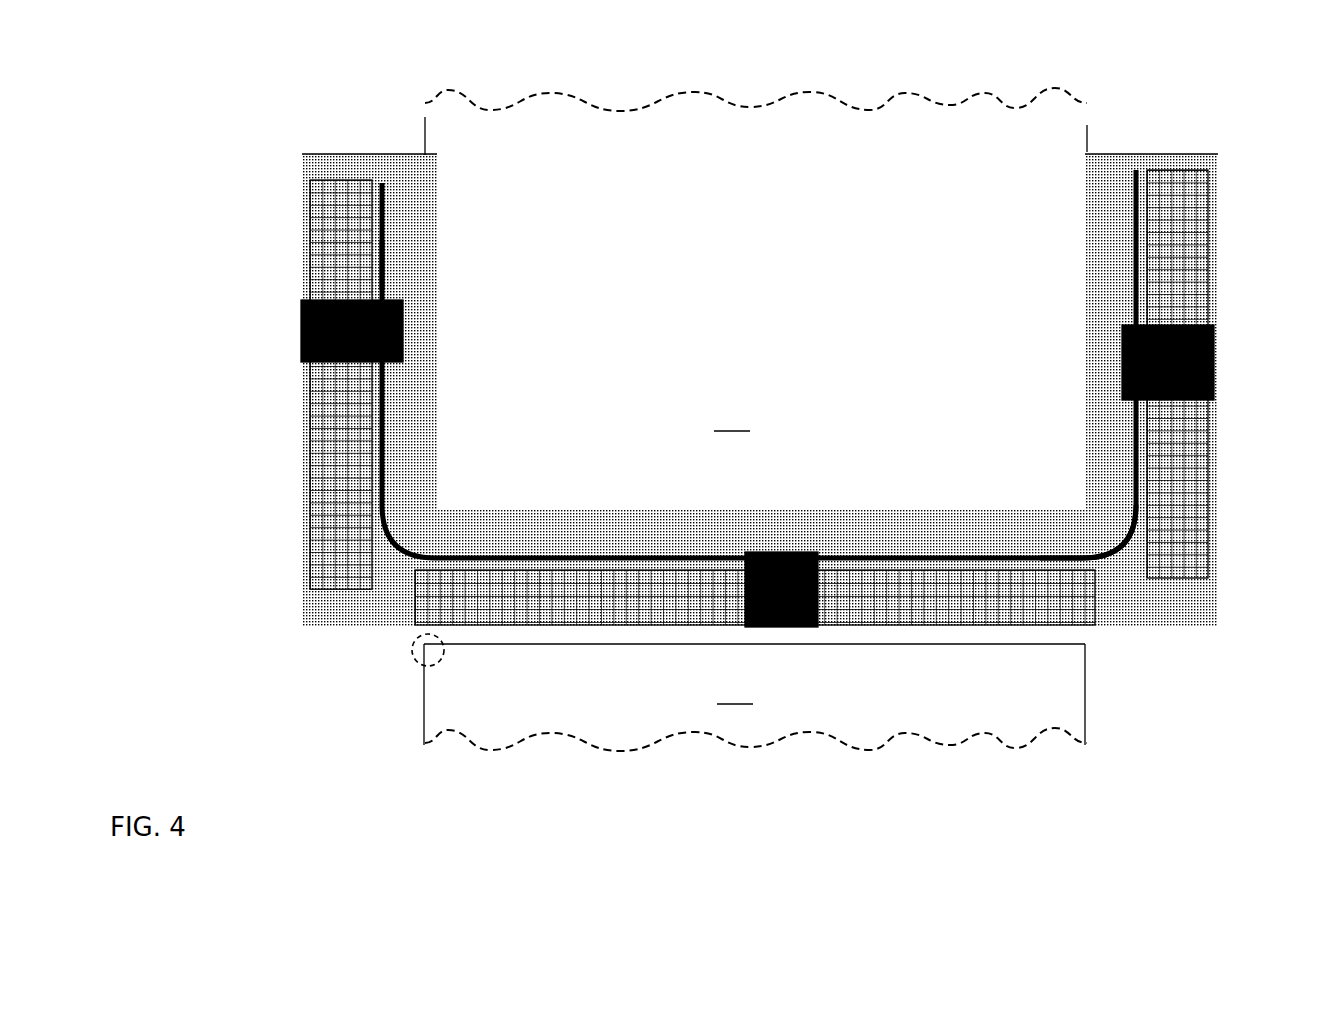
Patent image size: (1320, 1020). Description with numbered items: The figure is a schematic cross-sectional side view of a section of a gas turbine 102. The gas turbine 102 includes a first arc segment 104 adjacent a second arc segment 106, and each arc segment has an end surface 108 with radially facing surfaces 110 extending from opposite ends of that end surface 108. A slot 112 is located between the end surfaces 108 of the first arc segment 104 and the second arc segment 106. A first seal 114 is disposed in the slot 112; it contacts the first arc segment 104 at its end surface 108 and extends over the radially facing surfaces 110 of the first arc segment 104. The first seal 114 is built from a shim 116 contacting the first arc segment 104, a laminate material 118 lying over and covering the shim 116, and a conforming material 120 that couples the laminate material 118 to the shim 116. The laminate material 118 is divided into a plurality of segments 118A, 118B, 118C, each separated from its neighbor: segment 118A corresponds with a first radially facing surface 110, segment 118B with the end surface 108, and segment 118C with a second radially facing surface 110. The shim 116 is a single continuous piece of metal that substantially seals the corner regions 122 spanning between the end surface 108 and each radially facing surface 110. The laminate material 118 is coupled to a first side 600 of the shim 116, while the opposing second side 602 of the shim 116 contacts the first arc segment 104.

The gas turbine 102 is at (266, 114).
The first arc segment 104 is at (732, 420).
The second arc segment 106 is at (590, 694).
The end surface 108 is at (898, 512).
The radially facing surfaces 110 is at (426, 118).
The slot 112 is at (411, 630).
The first seal 114 is at (340, 155).
The shim 116 is at (1133, 225).
The laminate material 118 is at (749, 406).
The segment 118A is at (330, 447).
The segment 118B is at (425, 605).
The segment 118C is at (1193, 481).
The conforming material 120 is at (302, 328).
The corner regions 122 is at (441, 500).
The first side 600 is at (1110, 562).
The second side 602 is at (393, 266).